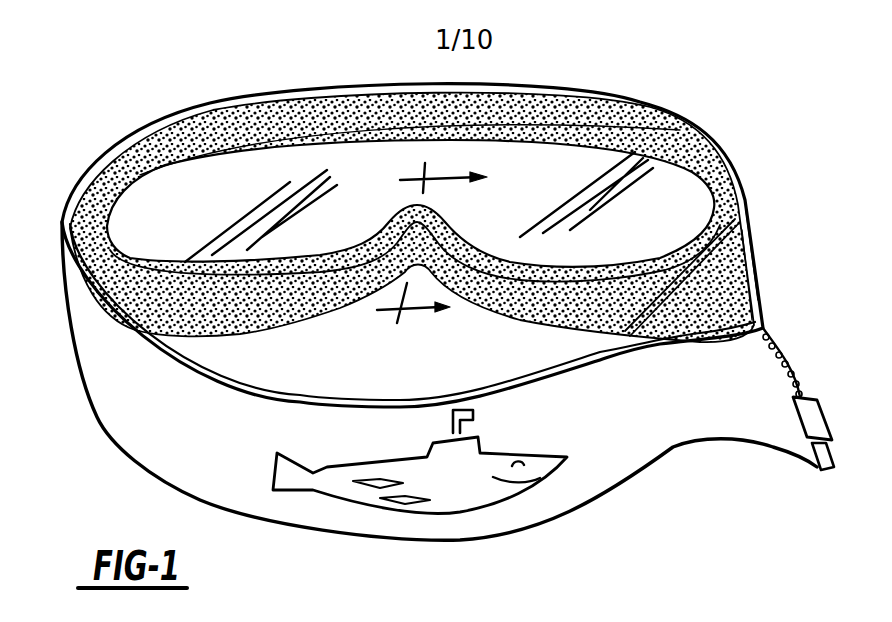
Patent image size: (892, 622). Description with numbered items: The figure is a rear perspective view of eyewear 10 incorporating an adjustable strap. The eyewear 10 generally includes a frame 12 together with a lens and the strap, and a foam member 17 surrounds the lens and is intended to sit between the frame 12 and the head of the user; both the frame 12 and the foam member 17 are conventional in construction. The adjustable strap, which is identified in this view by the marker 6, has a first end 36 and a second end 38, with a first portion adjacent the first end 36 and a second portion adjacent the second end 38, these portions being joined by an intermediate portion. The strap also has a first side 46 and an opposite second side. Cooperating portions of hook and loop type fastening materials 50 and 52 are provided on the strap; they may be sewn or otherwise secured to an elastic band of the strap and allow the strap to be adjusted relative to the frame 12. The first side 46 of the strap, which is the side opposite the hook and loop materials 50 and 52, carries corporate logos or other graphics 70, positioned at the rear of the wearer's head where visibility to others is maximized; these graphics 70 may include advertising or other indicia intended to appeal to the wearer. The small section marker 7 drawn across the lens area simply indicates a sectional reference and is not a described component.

The eyewear 10 is at (436, 300).
The frame 12 is at (556, 72).
The foam member 17 is at (293, 100).
The section line indicator 7 is at (444, 260).
The first end 36 is at (752, 236).
The hook and loop type fastening material 52 is at (760, 283).
The hook and loop type fastening material 50 is at (783, 340).
The second end 38 is at (797, 447).
The strap 6 is at (413, 410).
The first side 46 is at (213, 483).
The corporate logos or other graphics 70 is at (480, 497).